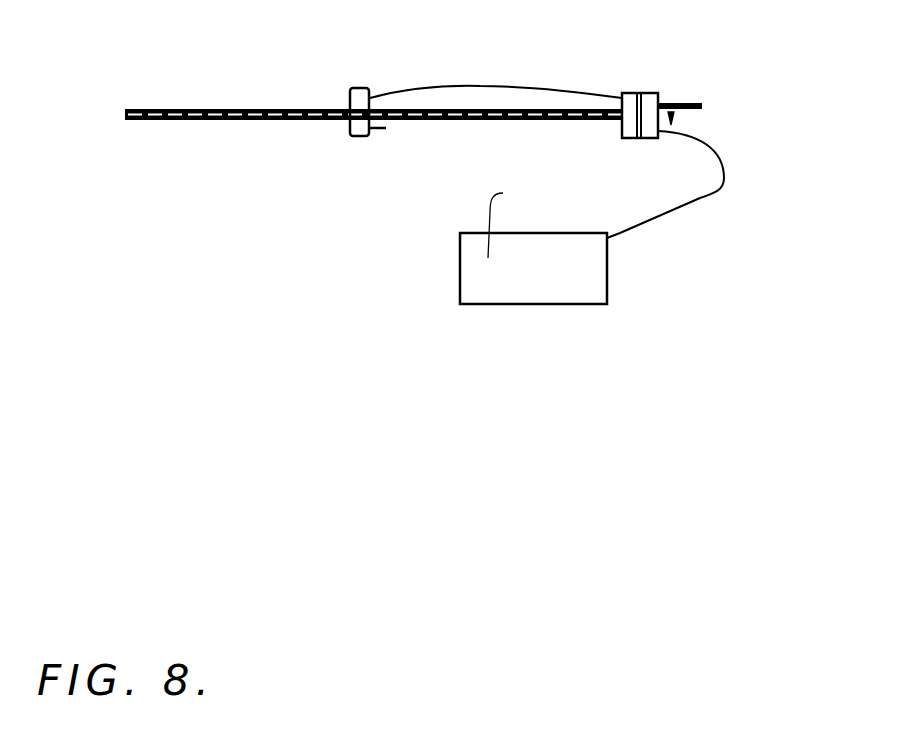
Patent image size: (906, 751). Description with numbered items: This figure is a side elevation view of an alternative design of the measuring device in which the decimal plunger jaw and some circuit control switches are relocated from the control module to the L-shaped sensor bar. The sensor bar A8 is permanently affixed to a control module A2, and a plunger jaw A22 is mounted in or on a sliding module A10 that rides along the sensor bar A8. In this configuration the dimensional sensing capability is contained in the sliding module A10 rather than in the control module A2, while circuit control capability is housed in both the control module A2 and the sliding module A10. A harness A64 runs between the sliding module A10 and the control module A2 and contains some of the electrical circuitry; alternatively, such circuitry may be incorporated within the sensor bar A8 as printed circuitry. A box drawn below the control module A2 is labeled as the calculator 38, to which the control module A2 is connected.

The sensor bar A8 is at (131, 121).
The sliding module A10 is at (370, 97).
The plunger jaw A22 is at (390, 133).
The harness A64 is at (508, 85).
The control module A2 is at (641, 93).
The calculator 38 is at (607, 277).